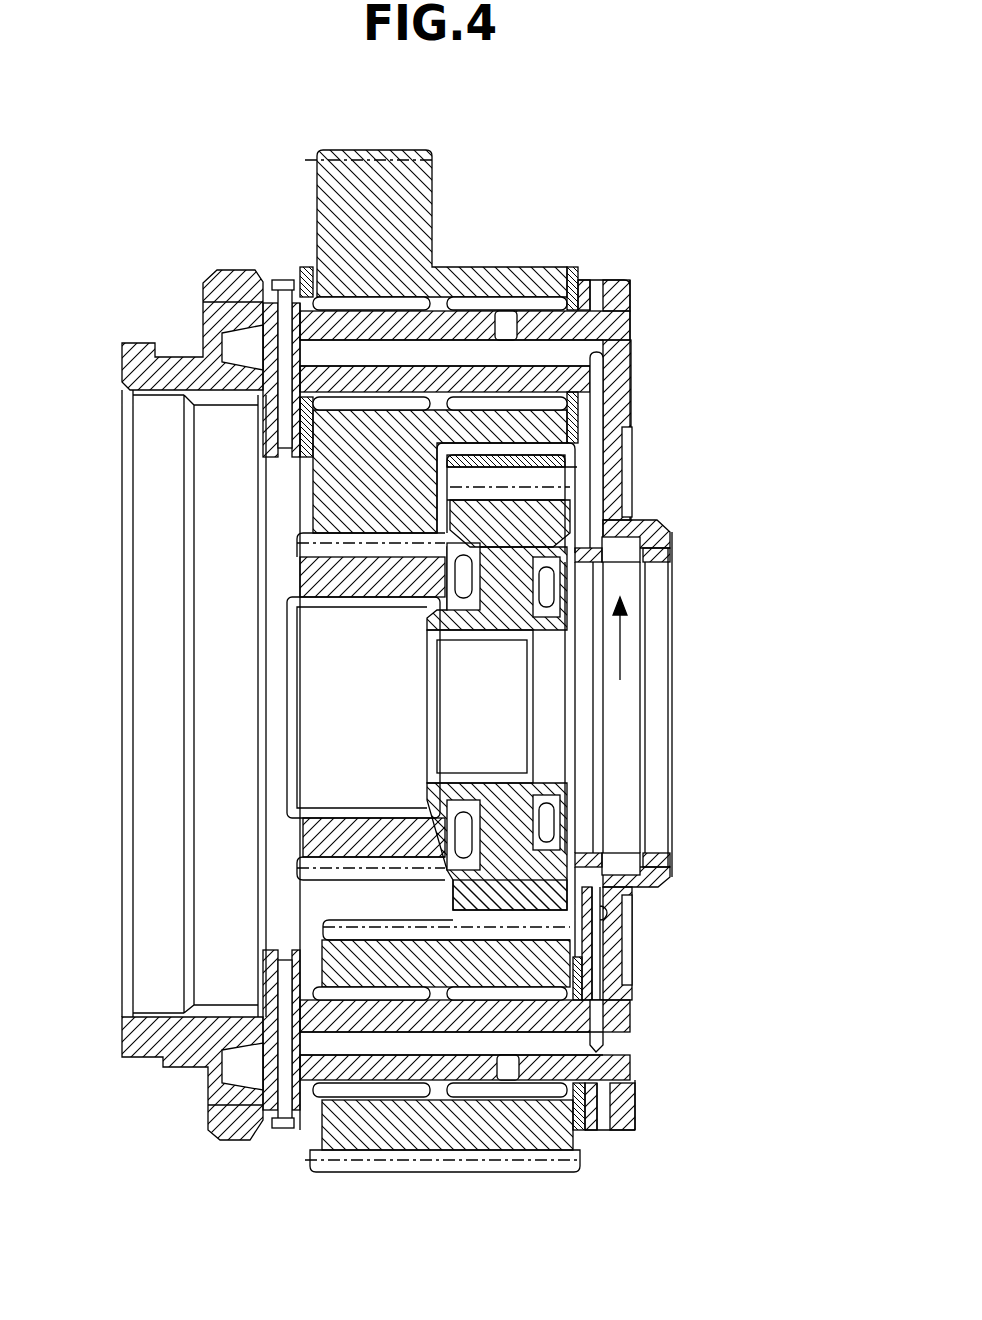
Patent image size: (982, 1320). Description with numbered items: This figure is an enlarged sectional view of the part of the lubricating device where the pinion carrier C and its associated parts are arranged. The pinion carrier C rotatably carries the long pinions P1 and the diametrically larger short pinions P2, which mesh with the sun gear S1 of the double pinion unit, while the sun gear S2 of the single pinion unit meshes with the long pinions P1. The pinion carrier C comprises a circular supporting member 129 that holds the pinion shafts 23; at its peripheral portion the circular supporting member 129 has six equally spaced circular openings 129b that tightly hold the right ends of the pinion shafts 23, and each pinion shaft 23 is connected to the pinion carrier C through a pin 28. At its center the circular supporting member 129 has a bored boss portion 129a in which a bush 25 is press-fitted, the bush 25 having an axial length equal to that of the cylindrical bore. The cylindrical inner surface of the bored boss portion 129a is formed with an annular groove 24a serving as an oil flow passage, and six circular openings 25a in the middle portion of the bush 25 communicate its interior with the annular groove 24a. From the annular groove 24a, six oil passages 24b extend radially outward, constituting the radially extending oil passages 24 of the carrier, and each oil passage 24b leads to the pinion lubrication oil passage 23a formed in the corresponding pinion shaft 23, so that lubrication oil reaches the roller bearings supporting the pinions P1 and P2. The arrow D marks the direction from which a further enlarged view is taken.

The pin 28 is at (256, 280).
The short pinion P2 is at (438, 206).
The pinion shaft 23 is at (478, 305).
The pinion carrier C is at (638, 290).
The pinion lubrication oil passage 23a is at (552, 352).
The circular opening 129b is at (632, 380).
The radially extending oil passage 24 is at (618, 440).
The circular supporting member 129 is at (640, 463).
The oil passage 24b is at (626, 494).
The bored boss portion 129a is at (670, 540).
The annular groove 24a is at (612, 552).
The circular opening 25a is at (640, 565).
The arrow D is at (621, 645).
The bush 25 is at (657, 840).
The sun gear S1 is at (345, 885).
The sun gear S2 is at (455, 905).
The long pinion P1 is at (493, 1172).